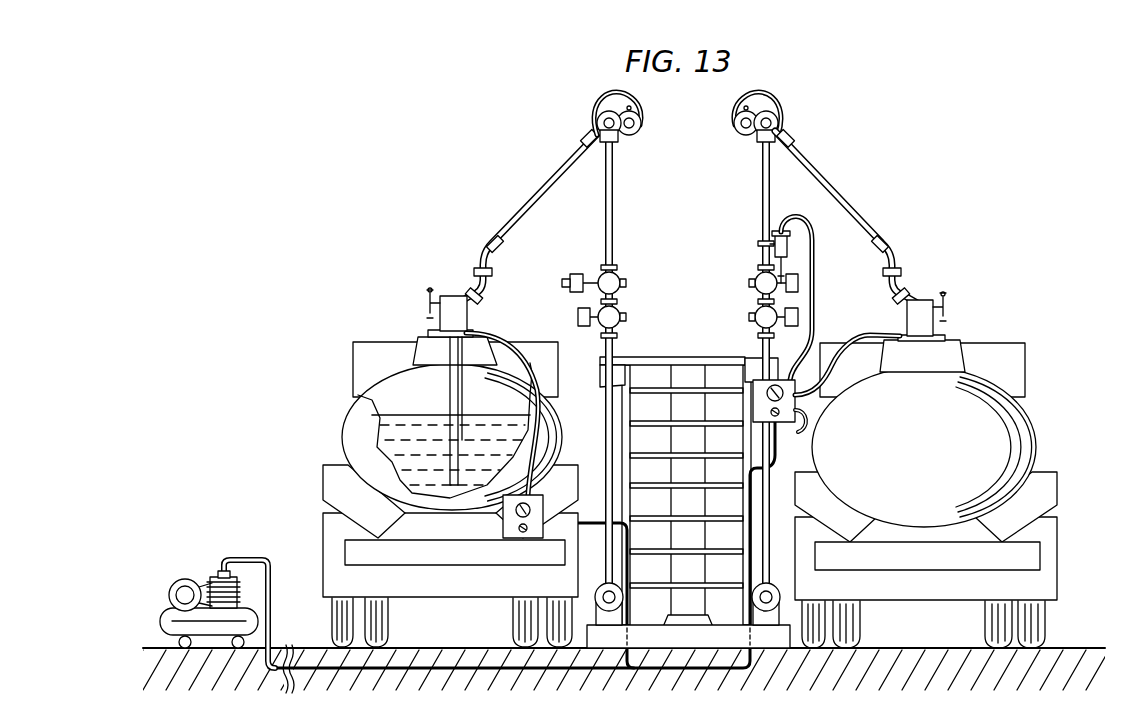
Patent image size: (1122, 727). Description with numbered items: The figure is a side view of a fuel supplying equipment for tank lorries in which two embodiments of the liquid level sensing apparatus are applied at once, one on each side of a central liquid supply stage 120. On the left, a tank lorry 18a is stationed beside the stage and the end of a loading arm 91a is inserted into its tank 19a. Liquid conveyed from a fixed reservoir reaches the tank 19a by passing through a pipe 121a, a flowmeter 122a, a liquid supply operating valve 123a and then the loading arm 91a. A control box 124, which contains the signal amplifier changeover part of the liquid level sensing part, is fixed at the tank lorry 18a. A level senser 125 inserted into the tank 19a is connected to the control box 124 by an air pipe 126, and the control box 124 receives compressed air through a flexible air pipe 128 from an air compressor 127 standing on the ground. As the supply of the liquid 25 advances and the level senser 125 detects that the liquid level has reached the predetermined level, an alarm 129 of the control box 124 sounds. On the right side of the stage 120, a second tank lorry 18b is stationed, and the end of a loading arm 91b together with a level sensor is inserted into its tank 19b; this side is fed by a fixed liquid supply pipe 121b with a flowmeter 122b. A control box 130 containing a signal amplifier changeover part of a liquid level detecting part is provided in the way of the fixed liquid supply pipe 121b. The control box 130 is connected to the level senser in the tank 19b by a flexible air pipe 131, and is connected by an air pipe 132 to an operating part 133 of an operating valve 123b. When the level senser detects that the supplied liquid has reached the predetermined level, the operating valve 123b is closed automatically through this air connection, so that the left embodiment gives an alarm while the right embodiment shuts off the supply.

The tank lorry 18a is at (395, 336).
The tank lorry 18b is at (991, 339).
The tank 19a is at (427, 436).
The tank 19b is at (1020, 421).
The liquid 25 is at (400, 424).
The loading arm 91a is at (516, 209).
The loading arm 91b is at (843, 203).
The liquid supply stage 120 is at (665, 353).
The pipe 121a is at (606, 419).
The fixed liquid supply pipe 121b is at (771, 474).
The flowmeter 122a is at (609, 331).
The flowmeter 122b is at (759, 329).
The liquid supply operating valve 123a is at (600, 274).
The operating valve 123b is at (745, 274).
The control box 124 is at (491, 544).
The level senser 125 is at (464, 400).
The air pipe 126 is at (534, 346).
The air compressor 127 is at (217, 578).
The flexible air pipe 128 is at (440, 668).
The alarm 129 is at (520, 532).
The control box 130 is at (798, 402).
The flexible air pipe 131 is at (862, 340).
The air pipe 132 is at (812, 292).
The operating part 133 is at (790, 252).